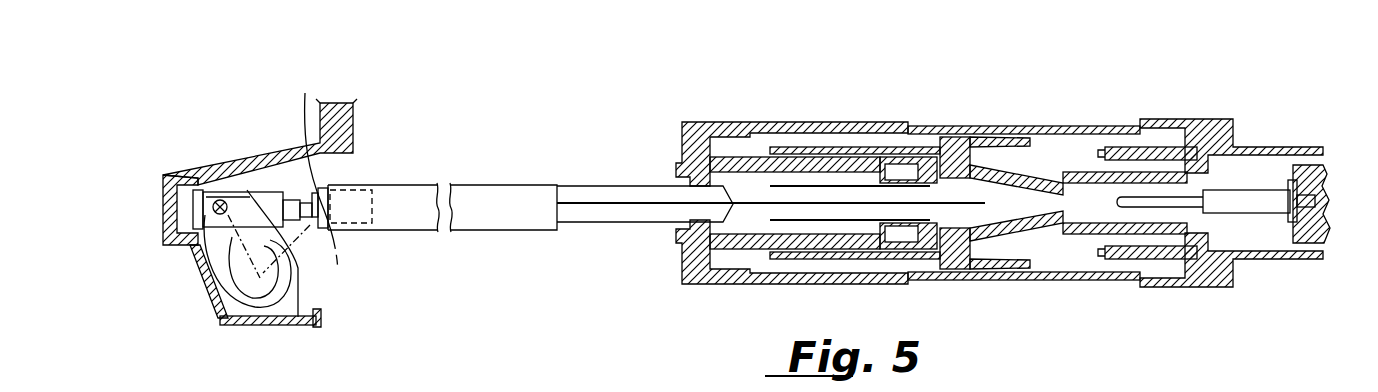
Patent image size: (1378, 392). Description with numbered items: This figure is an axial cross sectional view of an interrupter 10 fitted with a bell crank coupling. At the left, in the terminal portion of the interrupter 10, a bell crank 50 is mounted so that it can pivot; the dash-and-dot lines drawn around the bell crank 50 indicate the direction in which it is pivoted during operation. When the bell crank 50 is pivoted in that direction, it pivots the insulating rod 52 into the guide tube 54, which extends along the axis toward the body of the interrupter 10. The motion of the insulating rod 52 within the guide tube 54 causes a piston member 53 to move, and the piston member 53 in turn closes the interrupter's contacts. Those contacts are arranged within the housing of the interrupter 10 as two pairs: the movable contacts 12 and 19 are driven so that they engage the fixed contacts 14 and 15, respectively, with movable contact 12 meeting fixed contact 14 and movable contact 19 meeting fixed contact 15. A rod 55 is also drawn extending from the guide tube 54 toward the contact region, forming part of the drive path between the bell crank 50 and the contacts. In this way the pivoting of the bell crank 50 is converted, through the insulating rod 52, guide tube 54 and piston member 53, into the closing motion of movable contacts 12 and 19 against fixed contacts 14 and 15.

The interrupter 10 is at (1262, 108).
The movable contact 12 is at (1036, 293).
The fixed contact 14 is at (1113, 202).
The fixed contact 15 is at (1108, 147).
The movable contact 19 is at (1020, 140).
The bell crank 50 is at (240, 257).
The insulating rod 52 is at (263, 197).
The piston member 53 is at (317, 169).
The guide tube 54 is at (497, 186).
The push rod 55 is at (628, 186).